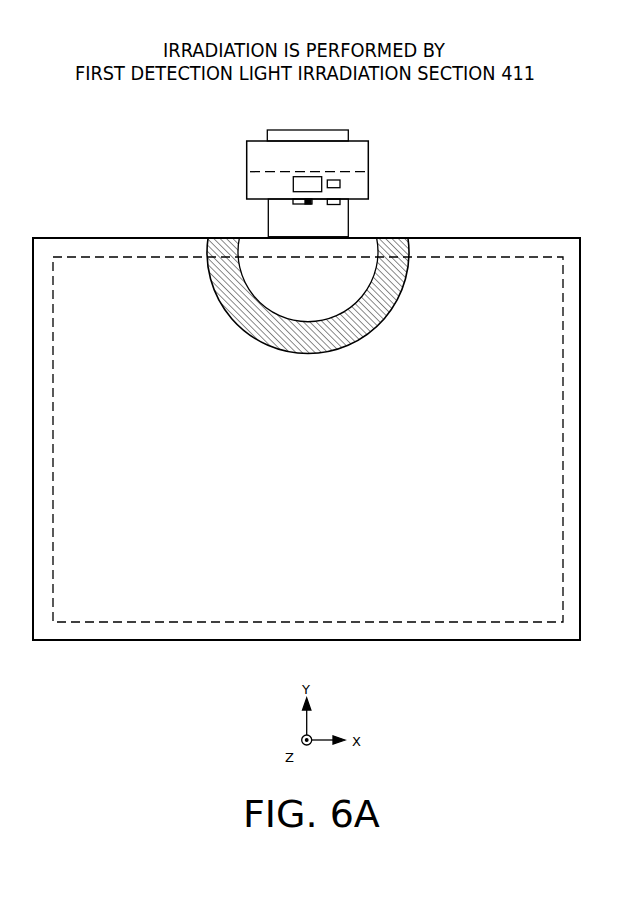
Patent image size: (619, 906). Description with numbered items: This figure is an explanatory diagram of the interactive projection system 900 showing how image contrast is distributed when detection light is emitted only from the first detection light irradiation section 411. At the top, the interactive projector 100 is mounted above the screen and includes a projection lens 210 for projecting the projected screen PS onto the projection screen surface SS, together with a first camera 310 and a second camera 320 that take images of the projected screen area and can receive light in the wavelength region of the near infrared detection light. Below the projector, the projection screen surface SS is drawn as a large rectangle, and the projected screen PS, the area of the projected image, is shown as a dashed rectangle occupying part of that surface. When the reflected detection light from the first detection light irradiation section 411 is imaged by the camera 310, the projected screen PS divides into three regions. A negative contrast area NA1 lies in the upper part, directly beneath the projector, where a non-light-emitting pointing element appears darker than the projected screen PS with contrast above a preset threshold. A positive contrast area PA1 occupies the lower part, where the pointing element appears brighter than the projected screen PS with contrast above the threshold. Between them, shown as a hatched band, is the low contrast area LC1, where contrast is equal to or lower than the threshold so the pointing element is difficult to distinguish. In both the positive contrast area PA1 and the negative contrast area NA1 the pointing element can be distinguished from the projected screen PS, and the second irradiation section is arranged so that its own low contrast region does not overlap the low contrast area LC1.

The interactive projection system 900 is at (544, 153).
The interactive projector 100 is at (369, 156).
The projection lens 210 is at (293, 186).
The first camera 310 is at (340, 184).
The second camera 320 is at (342, 204).
The first detection light irradiation section 411 is at (295, 200).
The projection screen surface SS is at (83, 244).
The projected screen PS is at (148, 257).
The negative contrast area NA1 is at (326, 284).
The low contrast area LC1 is at (327, 320).
The positive contrast area PA1 is at (333, 468).